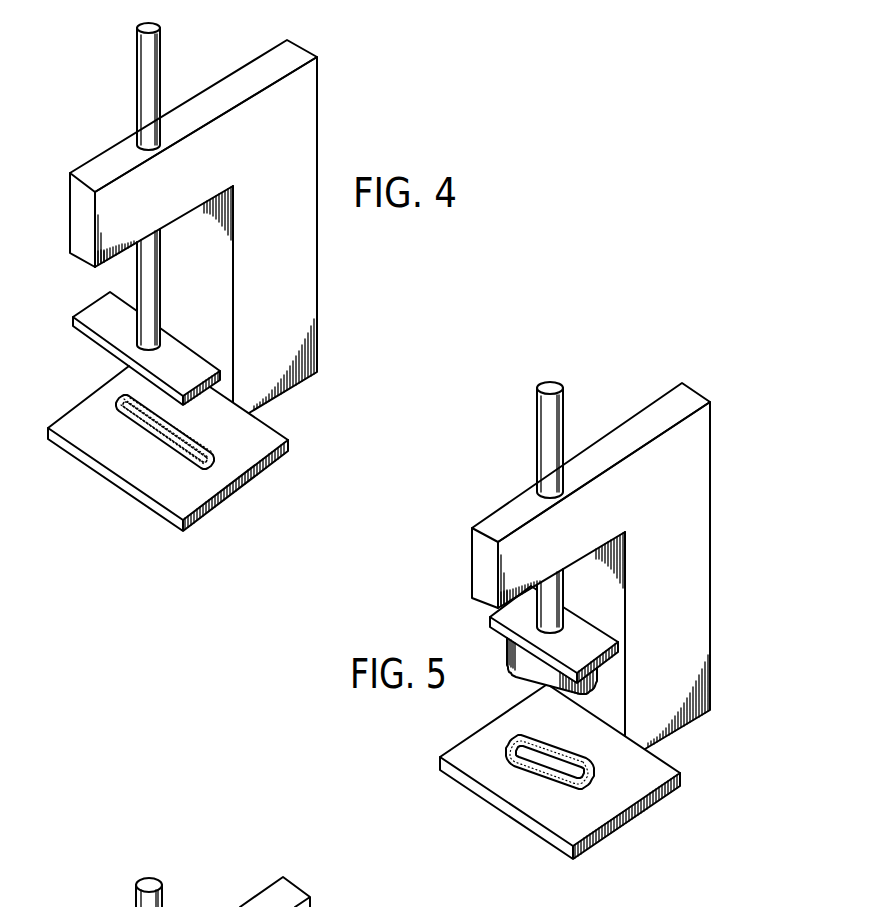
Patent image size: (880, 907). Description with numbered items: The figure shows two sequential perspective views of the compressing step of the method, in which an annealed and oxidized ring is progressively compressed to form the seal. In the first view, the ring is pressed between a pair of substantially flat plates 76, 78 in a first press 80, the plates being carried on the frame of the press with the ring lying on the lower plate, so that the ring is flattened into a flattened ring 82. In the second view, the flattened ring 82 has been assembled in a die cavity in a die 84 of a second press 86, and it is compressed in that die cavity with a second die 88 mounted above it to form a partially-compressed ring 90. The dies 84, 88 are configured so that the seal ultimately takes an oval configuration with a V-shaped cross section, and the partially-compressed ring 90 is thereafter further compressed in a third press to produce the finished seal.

In FIG. 4, the first press 80 is at (299, 166).
In FIG. 4, the plate 76 is at (108, 330).
In FIG. 4, the plate 78 is at (120, 457).
In FIG. 4, the flattened ring 82 is at (217, 450).
In FIG. 5, the second press 86 is at (690, 612).
In FIG. 5, the second die 88 is at (523, 670).
In FIG. 5, the die 84 is at (483, 777).
In FIG. 5, the partially-compressed ring 90 is at (587, 787).